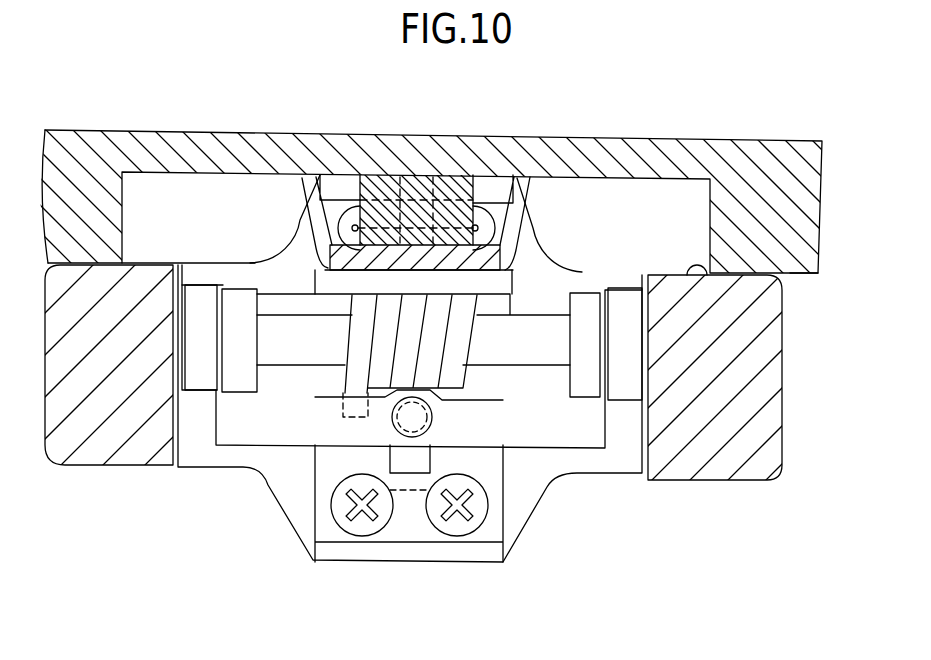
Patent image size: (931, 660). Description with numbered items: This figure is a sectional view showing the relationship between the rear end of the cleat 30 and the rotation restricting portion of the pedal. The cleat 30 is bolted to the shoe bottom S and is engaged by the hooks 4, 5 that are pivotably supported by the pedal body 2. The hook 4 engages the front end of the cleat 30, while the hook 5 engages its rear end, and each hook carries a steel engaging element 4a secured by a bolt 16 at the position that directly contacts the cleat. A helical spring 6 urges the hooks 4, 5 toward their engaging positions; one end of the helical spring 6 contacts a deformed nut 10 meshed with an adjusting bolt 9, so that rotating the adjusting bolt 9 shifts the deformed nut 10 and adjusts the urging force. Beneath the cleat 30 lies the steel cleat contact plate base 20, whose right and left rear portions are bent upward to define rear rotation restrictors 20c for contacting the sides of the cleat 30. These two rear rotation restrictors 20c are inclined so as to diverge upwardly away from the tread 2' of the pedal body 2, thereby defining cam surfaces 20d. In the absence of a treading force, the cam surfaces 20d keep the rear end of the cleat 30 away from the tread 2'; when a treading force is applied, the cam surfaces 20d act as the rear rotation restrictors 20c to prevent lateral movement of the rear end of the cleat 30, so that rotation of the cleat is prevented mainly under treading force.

The pedal body 2 is at (177, 402).
The tread 2' is at (691, 377).
The hook 4 is at (530, 540).
The engaging element 4a is at (463, 548).
The hook 5 is at (309, 184).
The helical spring 6 is at (460, 378).
The adjusting bolt 9 is at (418, 415).
The deformed nut 10 is at (390, 455).
The bolt 16 is at (433, 525).
The cleat contact plate base 20 is at (346, 276).
The rear rotation restrictor 20c is at (310, 183).
The cam surface 20d is at (520, 216).
The cleat 30 is at (463, 192).
The shoe bottom S is at (808, 277).